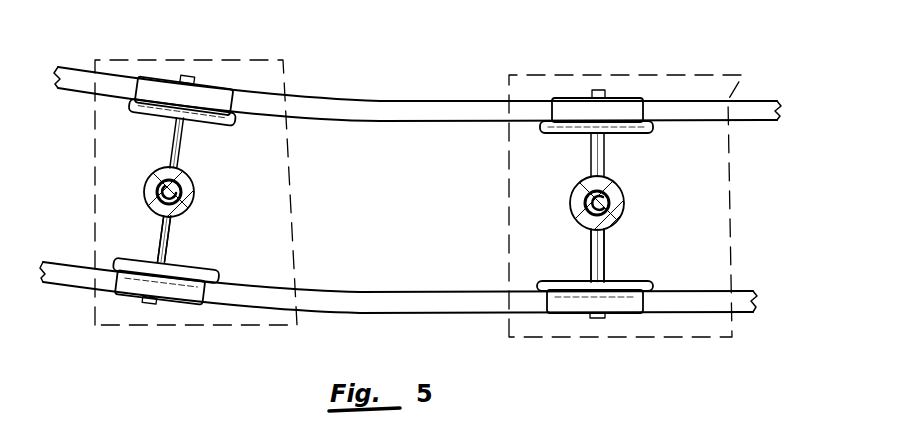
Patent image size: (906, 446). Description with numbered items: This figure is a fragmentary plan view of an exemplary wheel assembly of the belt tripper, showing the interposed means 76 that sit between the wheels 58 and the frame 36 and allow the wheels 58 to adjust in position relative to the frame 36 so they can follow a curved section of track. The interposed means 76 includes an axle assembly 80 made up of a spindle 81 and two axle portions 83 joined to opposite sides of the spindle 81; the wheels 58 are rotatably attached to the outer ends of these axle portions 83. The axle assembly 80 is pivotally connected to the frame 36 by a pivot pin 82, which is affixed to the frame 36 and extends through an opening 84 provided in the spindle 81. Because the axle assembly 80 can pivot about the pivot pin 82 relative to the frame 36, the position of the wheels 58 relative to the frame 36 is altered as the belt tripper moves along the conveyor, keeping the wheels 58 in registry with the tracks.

The frame 36 is at (155, 60).
The wheels 58 is at (218, 85).
The interposed means 76 is at (245, 167).
The axle assembly 80 is at (160, 230).
The spindle 81 is at (197, 183).
The pivot pin 82 is at (165, 186).
The axle portions 83 is at (185, 147).
The opening 84 is at (160, 195).